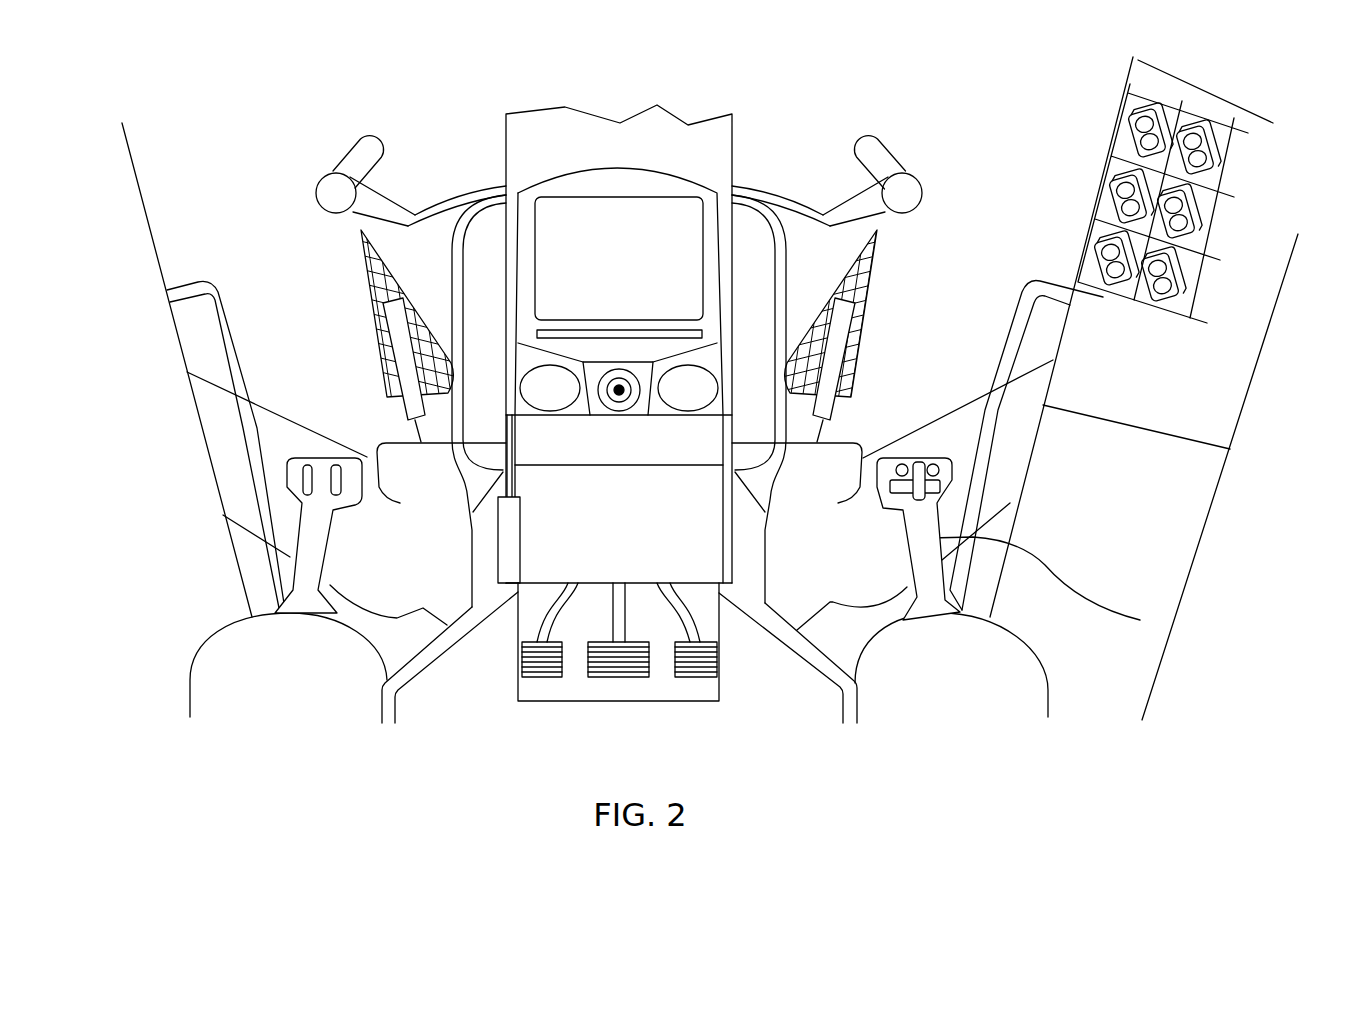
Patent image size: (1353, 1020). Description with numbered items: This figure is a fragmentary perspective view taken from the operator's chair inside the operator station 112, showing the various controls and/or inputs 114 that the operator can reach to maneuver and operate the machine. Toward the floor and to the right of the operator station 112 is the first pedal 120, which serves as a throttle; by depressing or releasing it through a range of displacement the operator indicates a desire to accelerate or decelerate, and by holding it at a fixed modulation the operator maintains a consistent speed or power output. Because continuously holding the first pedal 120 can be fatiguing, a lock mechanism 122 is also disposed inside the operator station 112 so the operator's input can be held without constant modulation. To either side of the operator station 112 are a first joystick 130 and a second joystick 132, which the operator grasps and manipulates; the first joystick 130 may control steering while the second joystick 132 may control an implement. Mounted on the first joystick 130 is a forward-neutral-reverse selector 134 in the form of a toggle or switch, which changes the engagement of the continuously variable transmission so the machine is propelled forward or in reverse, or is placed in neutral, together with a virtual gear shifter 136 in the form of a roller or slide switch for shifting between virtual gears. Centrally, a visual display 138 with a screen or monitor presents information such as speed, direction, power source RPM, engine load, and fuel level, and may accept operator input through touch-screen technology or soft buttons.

The operator station 112 is at (955, 188).
The controls and/or inputs 114 is at (1098, 83).
The first pedal 120 is at (697, 665).
The lock mechanism 122 is at (1107, 273).
The first joystick 130 is at (313, 530).
The second joystick 132 is at (1140, 620).
The forward-neutral-reverse selector 134 is at (306, 464).
The virtual gear shifter 136 is at (337, 464).
The visual display 138 is at (630, 187).